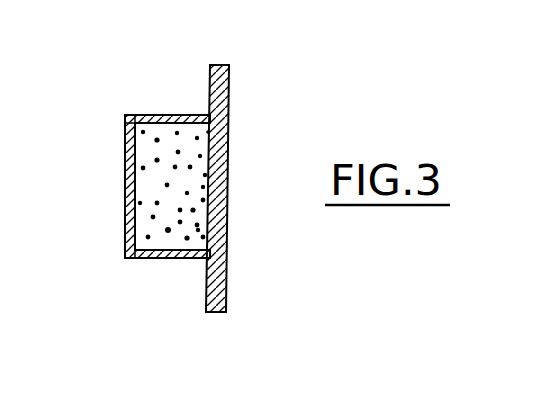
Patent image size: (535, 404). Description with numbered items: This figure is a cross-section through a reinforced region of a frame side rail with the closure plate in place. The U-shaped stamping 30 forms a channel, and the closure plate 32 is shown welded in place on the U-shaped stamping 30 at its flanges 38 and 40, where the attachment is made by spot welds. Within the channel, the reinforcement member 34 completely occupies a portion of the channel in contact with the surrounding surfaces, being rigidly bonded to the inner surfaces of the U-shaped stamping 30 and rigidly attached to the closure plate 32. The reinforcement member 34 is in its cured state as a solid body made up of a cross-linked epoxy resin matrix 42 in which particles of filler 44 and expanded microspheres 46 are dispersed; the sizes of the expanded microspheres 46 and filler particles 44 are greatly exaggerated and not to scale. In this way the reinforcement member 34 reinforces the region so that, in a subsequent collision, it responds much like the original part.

The U-shaped stamping 30 is at (150, 113).
The closure plate 32 is at (231, 78).
The reinforcement member 34 is at (140, 143).
The flange 38 is at (208, 73).
The flange 40 is at (207, 290).
The cross-linked epoxy resin matrix 42 is at (152, 232).
The filler particles 44 is at (145, 180).
The expanded microspheres 46 is at (166, 233).